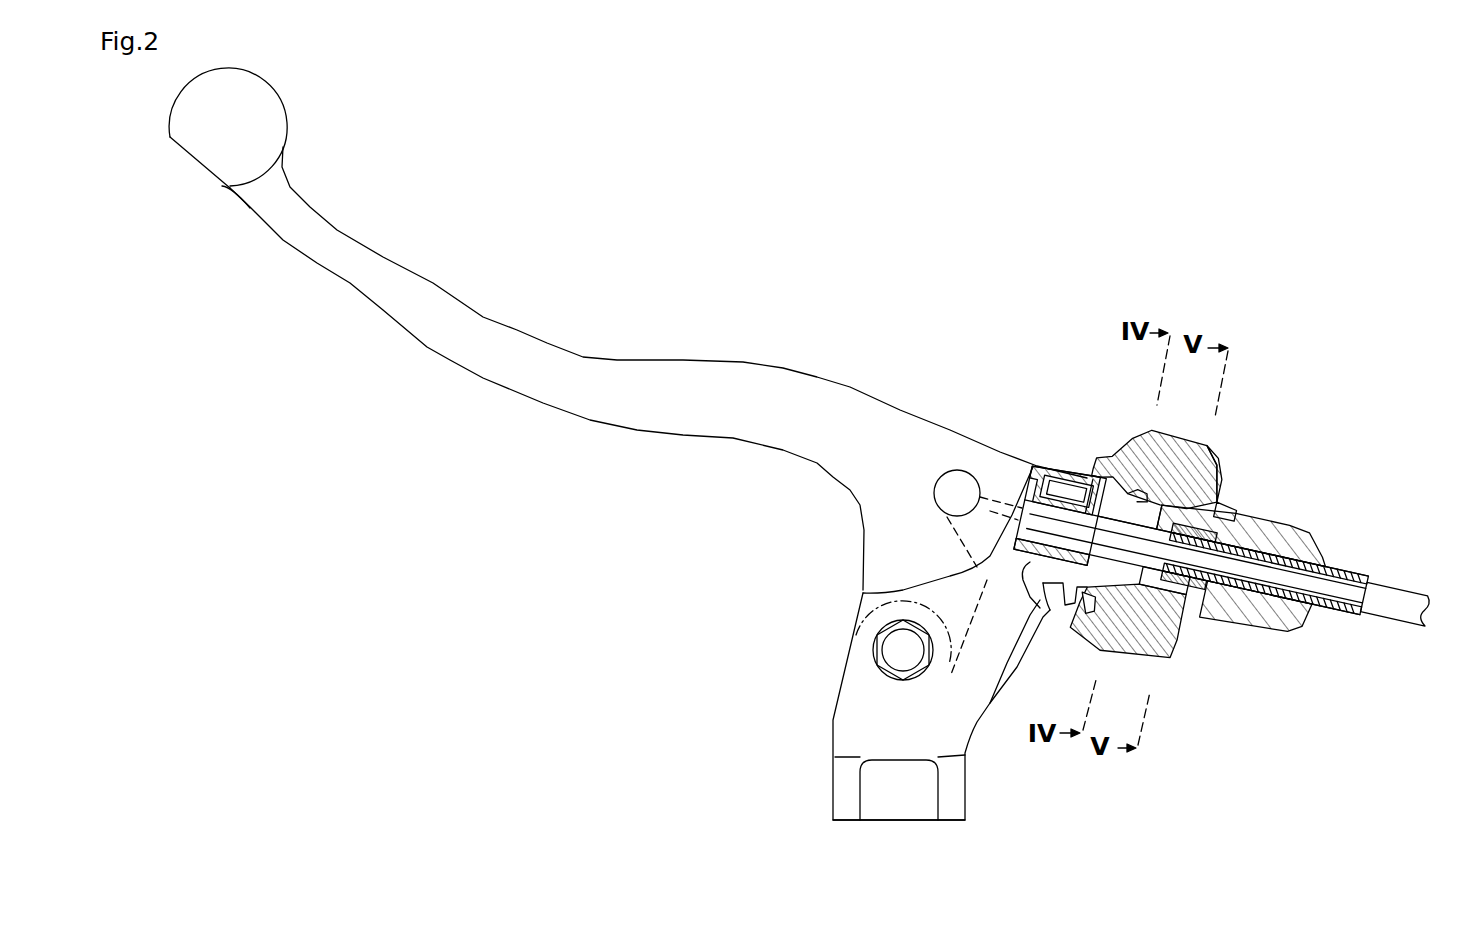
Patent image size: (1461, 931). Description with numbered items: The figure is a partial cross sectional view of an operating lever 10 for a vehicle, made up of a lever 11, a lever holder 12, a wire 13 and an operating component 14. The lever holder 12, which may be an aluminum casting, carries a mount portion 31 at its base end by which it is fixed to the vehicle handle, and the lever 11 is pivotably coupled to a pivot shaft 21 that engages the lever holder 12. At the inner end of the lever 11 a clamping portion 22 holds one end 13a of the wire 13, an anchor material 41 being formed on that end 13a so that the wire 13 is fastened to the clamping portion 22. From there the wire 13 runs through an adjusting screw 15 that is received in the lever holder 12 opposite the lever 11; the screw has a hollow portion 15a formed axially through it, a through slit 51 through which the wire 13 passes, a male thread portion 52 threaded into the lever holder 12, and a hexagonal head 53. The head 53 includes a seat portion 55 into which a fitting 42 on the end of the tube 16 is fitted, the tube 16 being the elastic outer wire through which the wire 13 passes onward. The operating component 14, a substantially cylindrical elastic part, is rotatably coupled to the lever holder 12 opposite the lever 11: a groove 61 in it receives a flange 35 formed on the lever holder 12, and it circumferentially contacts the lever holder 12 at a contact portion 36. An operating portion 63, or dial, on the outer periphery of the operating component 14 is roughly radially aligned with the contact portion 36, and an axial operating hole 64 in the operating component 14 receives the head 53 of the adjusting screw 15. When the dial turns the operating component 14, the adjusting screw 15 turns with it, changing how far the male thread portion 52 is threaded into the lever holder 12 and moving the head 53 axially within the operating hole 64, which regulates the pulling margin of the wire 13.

The operating lever 10 is at (1034, 288).
The lever 11 is at (540, 345).
The lever holder 12 is at (852, 689).
The wire 13 is at (1346, 578).
The end of the wire 13a is at (972, 475).
The operating component 14 is at (1300, 525).
The adjusting screw 15 is at (1176, 497).
The hollow portion 15a is at (1089, 600).
The tube 16 is at (1410, 592).
The pivot shaft 21 is at (897, 650).
The clamping portion 22 is at (937, 468).
The mount portion 31 is at (830, 822).
The flange 35 is at (1110, 612).
The contact portion 36 is at (1145, 488).
The anchor material 41 is at (957, 480).
The fitting 42 is at (1193, 600).
The slit 51 is at (1053, 498).
The male thread portion 52 is at (1042, 600).
The head 53 is at (1165, 612).
The seat portion 55 is at (1233, 510).
The groove 61 is at (1095, 492).
The operating portion 63 is at (1213, 442).
The operating hole 64 is at (1280, 608).